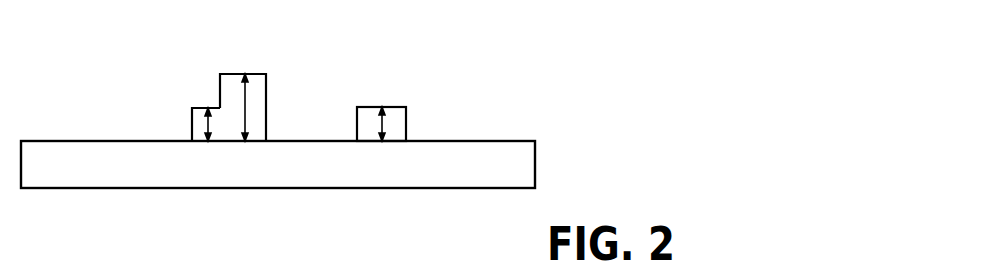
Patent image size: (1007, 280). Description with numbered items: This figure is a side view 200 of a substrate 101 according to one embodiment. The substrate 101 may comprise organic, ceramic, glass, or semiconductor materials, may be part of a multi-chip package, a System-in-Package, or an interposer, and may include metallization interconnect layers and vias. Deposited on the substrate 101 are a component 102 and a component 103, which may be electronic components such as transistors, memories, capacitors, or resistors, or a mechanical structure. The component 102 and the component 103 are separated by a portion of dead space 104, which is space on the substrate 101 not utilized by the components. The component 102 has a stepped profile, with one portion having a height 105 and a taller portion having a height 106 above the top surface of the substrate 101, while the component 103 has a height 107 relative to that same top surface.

The side view 200 is at (572, 38).
The substrate 101 is at (535, 169).
The component 102 is at (265, 73).
The component 103 is at (397, 115).
The dead space 104 is at (309, 118).
The height 105 is at (192, 123).
The height 106 is at (245, 115).
The height 107 is at (382, 127).